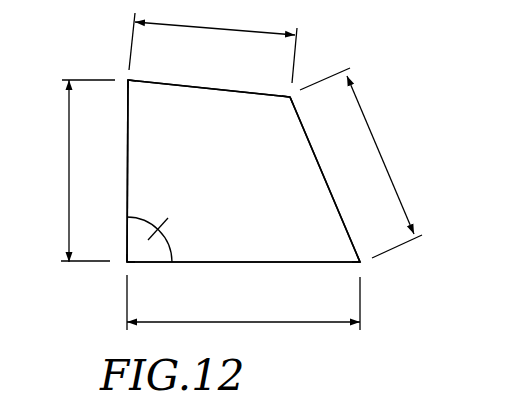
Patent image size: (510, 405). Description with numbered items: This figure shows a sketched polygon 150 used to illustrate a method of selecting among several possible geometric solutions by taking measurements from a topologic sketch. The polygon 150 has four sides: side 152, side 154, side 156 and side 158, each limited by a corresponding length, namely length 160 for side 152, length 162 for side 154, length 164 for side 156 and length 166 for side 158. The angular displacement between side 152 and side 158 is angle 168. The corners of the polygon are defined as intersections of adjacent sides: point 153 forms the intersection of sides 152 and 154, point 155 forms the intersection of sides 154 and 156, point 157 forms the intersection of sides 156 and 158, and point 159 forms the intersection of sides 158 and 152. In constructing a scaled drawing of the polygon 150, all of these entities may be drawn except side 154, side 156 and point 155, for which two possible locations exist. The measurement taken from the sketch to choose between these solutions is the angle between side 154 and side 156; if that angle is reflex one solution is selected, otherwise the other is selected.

The polygon 150 is at (312, 62).
The side 152 is at (127, 200).
The point 153 is at (127, 78).
The side 154 is at (245, 91).
The point 155 is at (294, 98).
The side 156 is at (343, 218).
The point 157 is at (360, 262).
The side 158 is at (312, 263).
The point 159 is at (127, 262).
The length 160 is at (68, 162).
The length 162 is at (208, 28).
The length 164 is at (387, 163).
The length 166 is at (255, 327).
The angle 168 is at (172, 252).